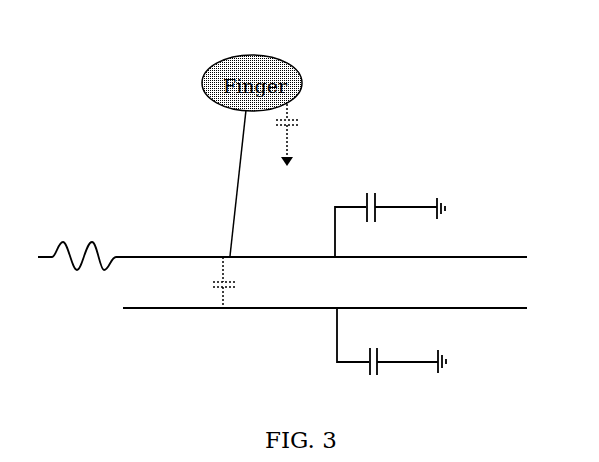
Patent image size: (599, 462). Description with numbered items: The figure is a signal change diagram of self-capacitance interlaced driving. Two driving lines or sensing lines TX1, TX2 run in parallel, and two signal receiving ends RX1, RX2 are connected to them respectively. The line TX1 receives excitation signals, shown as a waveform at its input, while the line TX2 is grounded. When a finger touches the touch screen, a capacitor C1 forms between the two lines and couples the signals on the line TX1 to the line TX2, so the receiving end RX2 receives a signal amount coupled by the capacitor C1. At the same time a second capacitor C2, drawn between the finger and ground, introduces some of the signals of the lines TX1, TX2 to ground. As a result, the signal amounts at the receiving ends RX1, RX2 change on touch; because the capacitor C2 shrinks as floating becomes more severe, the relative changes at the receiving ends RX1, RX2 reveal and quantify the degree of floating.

The driving line or sensing line TX1 is at (282, 256).
The driving line or sensing line TX2 is at (325, 300).
The signal receiving end RX1 is at (483, 249).
The signal receiving end RX2 is at (483, 300).
The capacitor C1 is at (239, 282).
The capacitor C2 is at (274, 135).